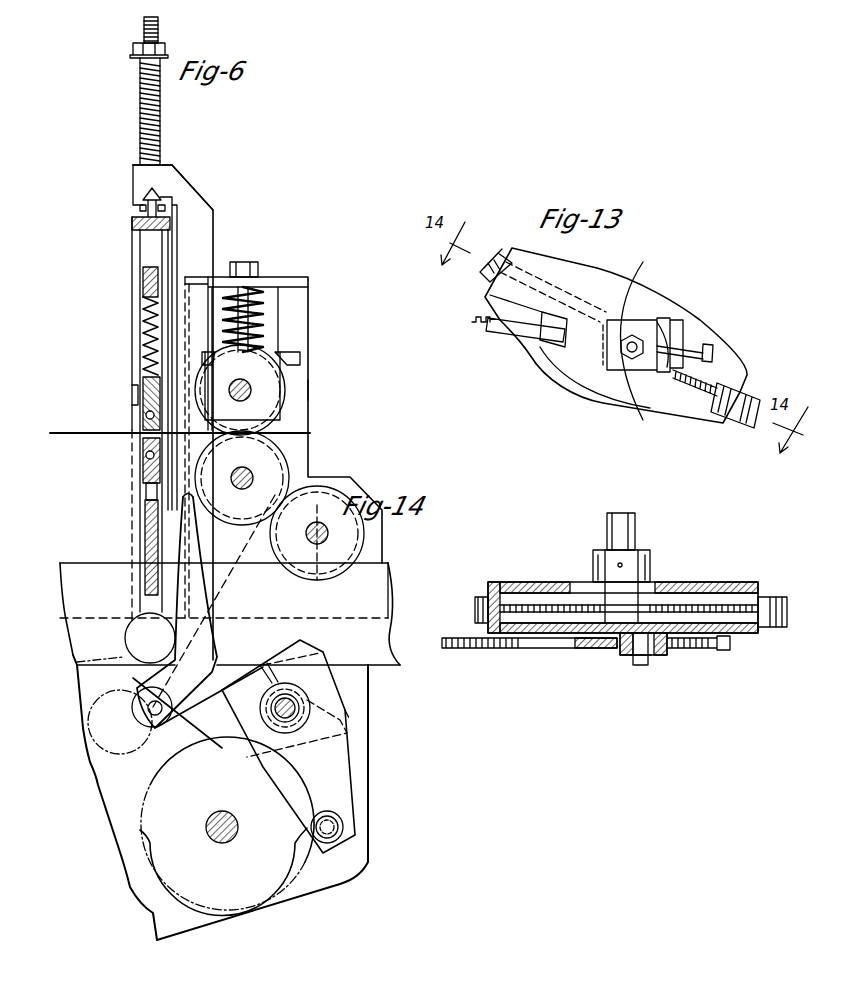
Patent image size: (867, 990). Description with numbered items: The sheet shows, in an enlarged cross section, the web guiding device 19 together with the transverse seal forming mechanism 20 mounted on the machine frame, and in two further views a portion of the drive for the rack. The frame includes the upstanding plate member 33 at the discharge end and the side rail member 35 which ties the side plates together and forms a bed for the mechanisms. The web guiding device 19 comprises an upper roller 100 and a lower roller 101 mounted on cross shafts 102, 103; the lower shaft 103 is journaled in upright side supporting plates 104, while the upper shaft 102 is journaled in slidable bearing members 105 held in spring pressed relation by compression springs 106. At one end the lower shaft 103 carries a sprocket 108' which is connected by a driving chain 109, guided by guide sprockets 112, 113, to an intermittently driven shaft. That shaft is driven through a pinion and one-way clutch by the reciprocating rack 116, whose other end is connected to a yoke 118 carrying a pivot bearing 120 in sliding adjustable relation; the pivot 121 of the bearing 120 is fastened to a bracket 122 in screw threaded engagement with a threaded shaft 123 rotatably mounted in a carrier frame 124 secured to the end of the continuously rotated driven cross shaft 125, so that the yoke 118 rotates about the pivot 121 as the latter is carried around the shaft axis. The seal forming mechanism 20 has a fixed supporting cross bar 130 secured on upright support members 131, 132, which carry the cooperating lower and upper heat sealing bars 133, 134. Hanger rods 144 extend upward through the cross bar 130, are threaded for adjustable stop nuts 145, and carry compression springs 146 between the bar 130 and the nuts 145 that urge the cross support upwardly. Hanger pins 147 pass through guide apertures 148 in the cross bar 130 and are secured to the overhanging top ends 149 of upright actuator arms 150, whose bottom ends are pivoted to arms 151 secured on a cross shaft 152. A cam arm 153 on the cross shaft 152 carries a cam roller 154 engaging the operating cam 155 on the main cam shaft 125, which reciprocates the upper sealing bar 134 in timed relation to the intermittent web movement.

In FIG. 6, the web guiding device 19 is at (302, 271).
In FIG. 6, the transverse seal forming mechanism 20 is at (200, 170).
In FIG. 6, the upstanding plate member 33 is at (363, 695).
In FIG. 6, the side rail member 35 is at (392, 597).
In FIG. 6, the upper roller 100 is at (290, 392).
In FIG. 6, the lower roller 101 is at (303, 478).
In FIG. 6, the cross shaft 102 is at (253, 387).
In FIG. 6, the cross shaft 103 is at (257, 477).
In FIG. 6, the side supporting plate 104 is at (313, 387).
In FIG. 6, the slidable bearing member 105 is at (285, 352).
In FIG. 6, the compression spring 106 is at (257, 300).
In FIG. 6, the sprocket 108' is at (199, 418).
In FIG. 6, the driving chain 109 is at (237, 585).
In FIG. 6, the guide sprocket 112 is at (105, 745).
In FIG. 6, the guide sprocket 113 is at (125, 628).
In FIG. 13, the reciprocating rack 116 is at (490, 333).
In FIG. 14, the reciprocating rack 116 is at (470, 650).
In FIG. 13, the yoke 118 is at (643, 268).
In FIG. 14, the yoke 118 is at (580, 650).
In FIG. 13, the pivot bearing 120 is at (643, 407).
In FIG. 14, the pivot bearing 120 is at (657, 657).
In FIG. 13, the pivot 121 is at (660, 325).
In FIG. 14, the pivot 121 is at (628, 655).
In FIG. 14, the bracket 122 is at (607, 607).
In FIG. 13, the threaded shaft 123 is at (710, 383).
In FIG. 14, the threaded shaft 123 is at (670, 607).
In FIG. 13, the carrier frame 124 is at (573, 250).
In FIG. 14, the carrier frame 124 is at (510, 583).
In FIG. 6, the driven cross shaft 125 is at (210, 832).
In FIG. 13, the driven cross shaft 125 is at (640, 295).
In FIG. 14, the driven cross shaft 125 is at (636, 535).
In FIG. 6, the fixed supporting cross bar 130 is at (133, 222).
In FIG. 6, the upright support member 131 is at (165, 245).
In FIG. 6, the upright support member 132 is at (135, 248).
In FIG. 6, the lower heat sealing bar 133 is at (143, 455).
In FIG. 6, the upper heat sealing bar 134 is at (143, 412).
In FIG. 6, the hanger rod 144 is at (159, 23).
In FIG. 6, the adjustable stop nut 145 is at (133, 50).
In FIG. 6, the compression spring 146 is at (140, 83).
In FIG. 6, the hanger pin 147 is at (148, 197).
In FIG. 6, the guide aperture 148 is at (107, 418).
In FIG. 6, the overhanging top end 149 is at (197, 140).
In FIG. 6, the upright actuator arm 150 is at (205, 203).
In FIG. 6, the arm 151 is at (187, 725).
In FIG. 6, the cross shaft 152 is at (305, 700).
In FIG. 6, the cam arm 153 is at (347, 777).
In FIG. 6, the cam roller 154 is at (343, 826).
In FIG. 6, the operating cam 155 is at (240, 880).